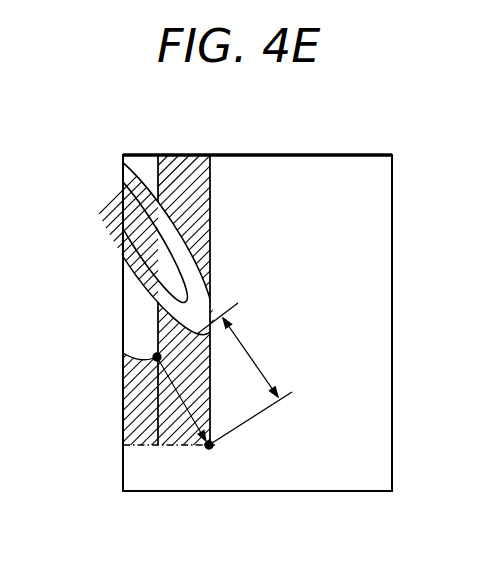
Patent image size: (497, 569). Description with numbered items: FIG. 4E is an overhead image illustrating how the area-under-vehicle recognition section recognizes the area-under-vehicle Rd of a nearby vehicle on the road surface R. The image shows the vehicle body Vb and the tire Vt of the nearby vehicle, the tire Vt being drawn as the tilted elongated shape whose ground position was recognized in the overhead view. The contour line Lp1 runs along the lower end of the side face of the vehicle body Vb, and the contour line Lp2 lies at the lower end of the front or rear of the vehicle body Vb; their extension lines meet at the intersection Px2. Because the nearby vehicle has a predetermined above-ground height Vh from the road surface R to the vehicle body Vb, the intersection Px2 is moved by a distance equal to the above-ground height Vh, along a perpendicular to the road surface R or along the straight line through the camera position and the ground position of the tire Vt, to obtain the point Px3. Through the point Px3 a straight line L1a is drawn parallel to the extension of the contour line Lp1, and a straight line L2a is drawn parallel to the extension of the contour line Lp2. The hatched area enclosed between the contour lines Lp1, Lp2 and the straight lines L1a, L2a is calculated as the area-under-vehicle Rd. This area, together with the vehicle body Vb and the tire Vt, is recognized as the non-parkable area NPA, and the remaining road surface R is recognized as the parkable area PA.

The road surface R is at (373, 208).
The parkable area PA is at (357, 343).
The non-parkable area NPA is at (140, 417).
The area-under-vehicle Rd is at (185, 204).
The contour line Lp1 is at (163, 177).
The straight line L1a is at (211, 197).
The tire Vt is at (136, 184).
The vehicle body Vb is at (140, 308).
The contour line Lp2 is at (124, 359).
The intersection Px2 is at (125, 385).
The straight line L2a is at (163, 445).
The point Px3 is at (211, 449).
The above-ground height Vh is at (244, 374).